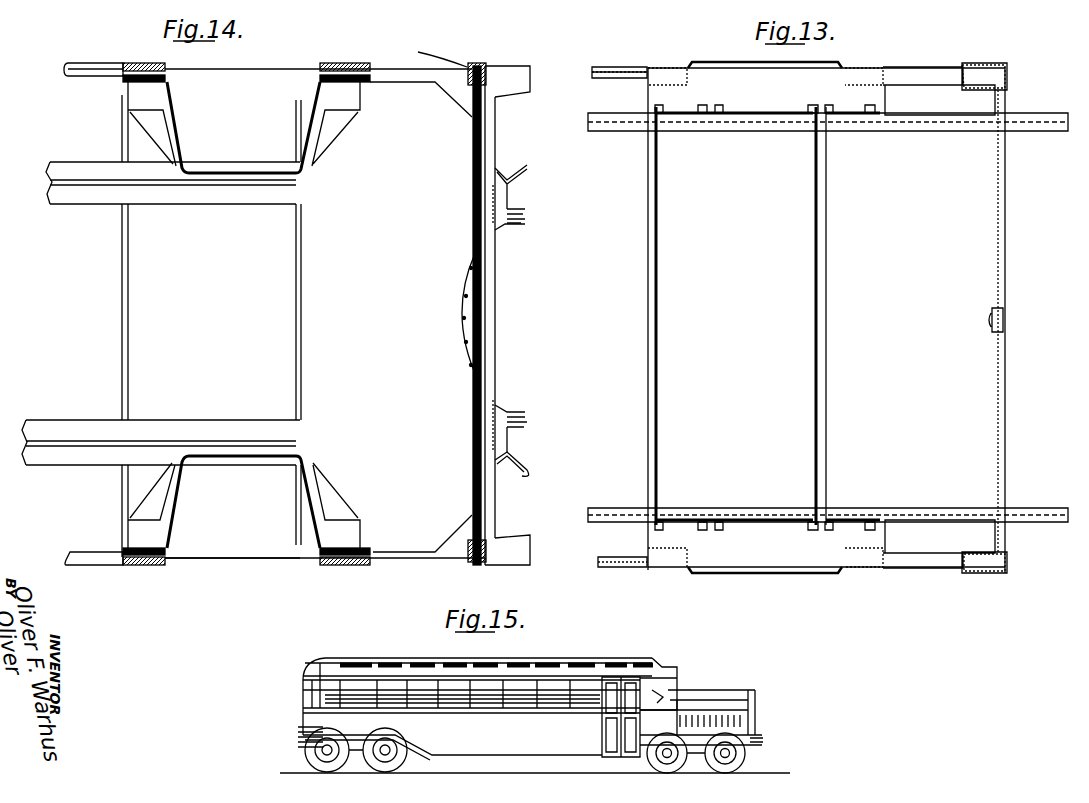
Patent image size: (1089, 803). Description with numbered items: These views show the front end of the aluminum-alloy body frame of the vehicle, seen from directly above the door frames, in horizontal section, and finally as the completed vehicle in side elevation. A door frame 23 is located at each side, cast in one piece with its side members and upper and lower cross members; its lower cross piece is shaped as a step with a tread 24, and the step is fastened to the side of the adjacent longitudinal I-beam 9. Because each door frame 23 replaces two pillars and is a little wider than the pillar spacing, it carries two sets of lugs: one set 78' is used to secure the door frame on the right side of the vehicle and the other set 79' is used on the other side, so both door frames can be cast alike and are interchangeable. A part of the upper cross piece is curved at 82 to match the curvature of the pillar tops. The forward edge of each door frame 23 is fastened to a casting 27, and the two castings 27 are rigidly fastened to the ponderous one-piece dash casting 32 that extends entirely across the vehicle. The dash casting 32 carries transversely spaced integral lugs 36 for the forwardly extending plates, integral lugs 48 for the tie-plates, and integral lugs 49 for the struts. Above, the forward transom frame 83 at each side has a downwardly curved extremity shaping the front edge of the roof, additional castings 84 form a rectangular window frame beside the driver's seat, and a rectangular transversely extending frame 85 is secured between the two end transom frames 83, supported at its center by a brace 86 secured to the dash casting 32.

In FIG. 14, the longitudinal I-beam 9 is at (88, 198).
In FIG. 14, the door frame 23 is at (168, 76).
In FIG. 14, the tread 24 is at (228, 553).
In FIG. 14, the casting 27 is at (422, 78).
In FIG. 14, the dash casting 32 is at (490, 354).
In FIG. 14, the integral lugs 36 is at (523, 227).
In FIG. 14, the integral lugs 48 is at (526, 167).
In FIG. 14, the integral lugs 49 is at (522, 212).
In FIG. 14, the additional castings 84 is at (362, 70).
In FIG. 13, the additional castings 84 is at (925, 73).
In FIG. 14, the brace 86 is at (477, 321).
In FIG. 13, the brace 86 is at (992, 317).
In FIG. 13, the curved part of upper cross piece 82 is at (823, 83).
In FIG. 13, the forward transom frame 83 is at (983, 127).
In FIG. 13, the rectangular transversely extending frame 85 is at (997, 235).
In FIG. 13, the lugs 78' is at (750, 333).
In FIG. 13, the lugs 79' is at (793, 337).